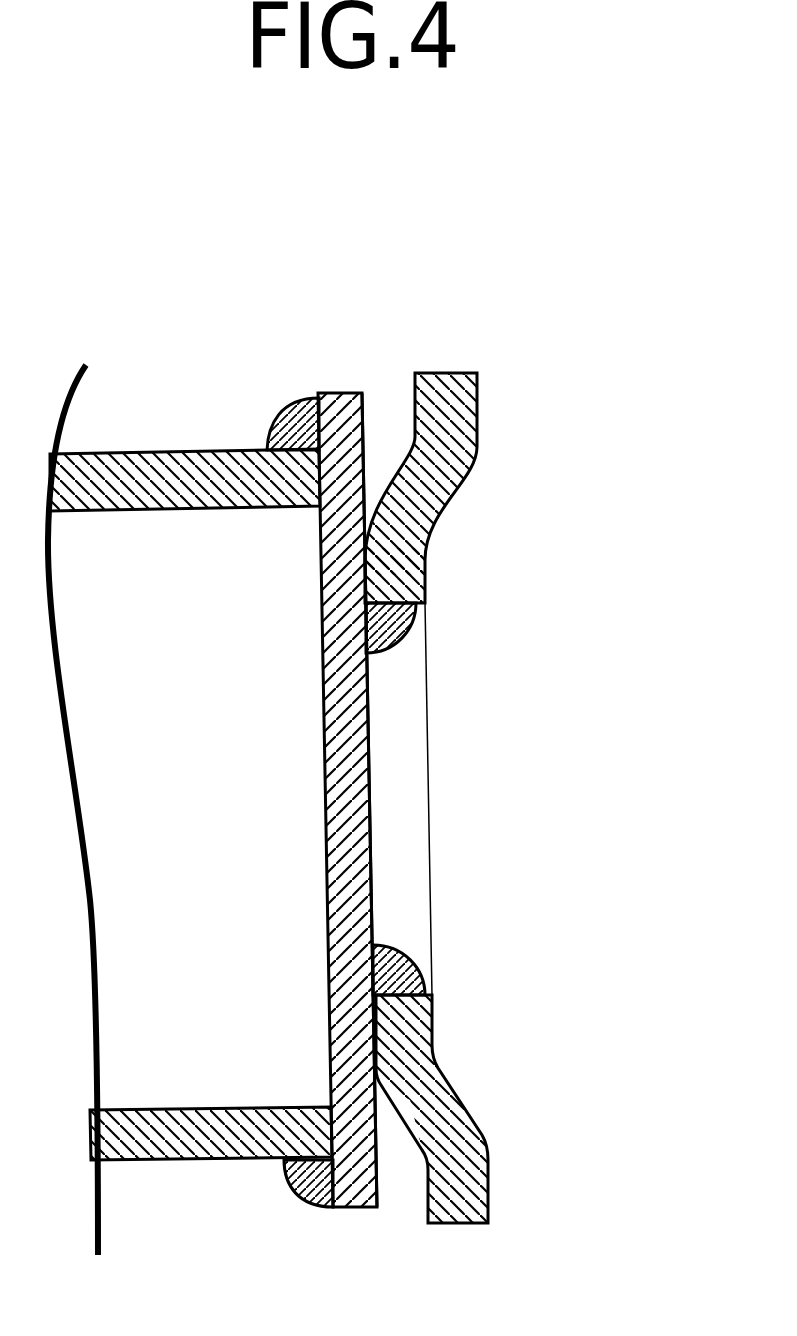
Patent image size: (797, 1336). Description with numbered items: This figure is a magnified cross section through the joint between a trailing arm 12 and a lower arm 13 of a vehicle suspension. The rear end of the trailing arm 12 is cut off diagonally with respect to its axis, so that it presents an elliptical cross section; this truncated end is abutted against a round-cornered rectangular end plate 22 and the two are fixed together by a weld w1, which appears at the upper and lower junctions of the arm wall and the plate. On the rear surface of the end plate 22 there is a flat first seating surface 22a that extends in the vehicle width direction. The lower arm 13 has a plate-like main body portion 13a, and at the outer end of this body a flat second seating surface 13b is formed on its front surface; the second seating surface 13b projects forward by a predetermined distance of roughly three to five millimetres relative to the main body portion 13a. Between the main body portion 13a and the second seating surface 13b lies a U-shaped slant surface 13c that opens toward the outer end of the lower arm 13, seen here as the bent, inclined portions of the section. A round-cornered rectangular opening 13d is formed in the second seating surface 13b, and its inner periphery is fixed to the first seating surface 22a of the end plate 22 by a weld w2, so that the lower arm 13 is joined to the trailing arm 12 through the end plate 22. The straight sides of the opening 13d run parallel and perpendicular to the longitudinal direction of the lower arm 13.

The trailing arm 12 is at (188, 452).
The lower arm 13 is at (512, 786).
The main body portion 13a is at (488, 1187).
The second seating surface 13b is at (415, 587).
The slant surface 13c is at (455, 498).
The opening 13d is at (432, 963).
The end plate 22 is at (371, 800).
The first seating surface 22a is at (372, 780).
The weld w1 is at (295, 411).
The weld w2 is at (407, 630).